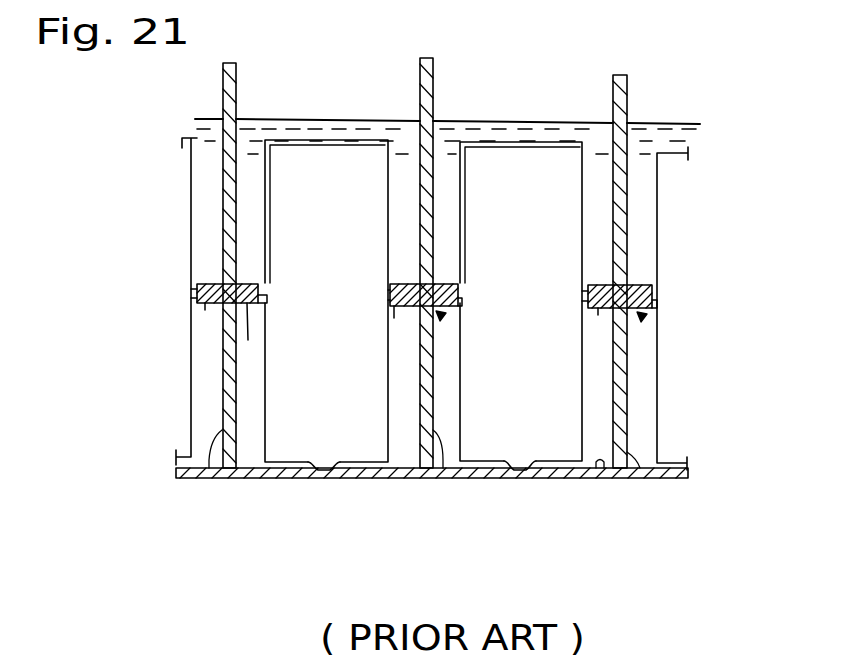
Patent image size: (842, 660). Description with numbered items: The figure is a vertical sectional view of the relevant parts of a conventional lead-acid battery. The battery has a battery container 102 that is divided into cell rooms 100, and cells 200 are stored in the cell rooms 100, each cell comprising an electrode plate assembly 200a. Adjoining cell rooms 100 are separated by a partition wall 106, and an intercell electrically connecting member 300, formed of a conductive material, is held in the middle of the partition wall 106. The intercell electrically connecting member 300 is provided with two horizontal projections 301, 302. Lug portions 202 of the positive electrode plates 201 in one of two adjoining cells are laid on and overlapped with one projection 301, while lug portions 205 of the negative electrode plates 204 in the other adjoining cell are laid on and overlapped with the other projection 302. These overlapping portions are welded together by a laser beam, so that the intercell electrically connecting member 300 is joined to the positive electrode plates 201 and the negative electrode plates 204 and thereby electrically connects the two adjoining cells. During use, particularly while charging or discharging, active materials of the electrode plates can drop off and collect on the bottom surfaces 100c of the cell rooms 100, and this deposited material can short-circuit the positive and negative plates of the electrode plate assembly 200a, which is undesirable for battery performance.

The cell room 100 is at (268, 122).
The battery container 102 is at (628, 108).
The bottom surface of the cell room 100c is at (600, 472).
The partition wall 106 is at (209, 468).
The cell 200 is at (363, 443).
The electrode plate assembly 200a is at (341, 445).
The positive electrode plate 201 is at (172, 210).
The lug portion of positive electrode plate 202 is at (258, 272).
The negative electrode plate 204 is at (332, 232).
The lug portion of negative electrode plate 205 is at (596, 283).
The intercell electrically connecting member 300 is at (248, 340).
The horizontal projection 301 is at (462, 313).
The horizontal projection 302 is at (205, 303).